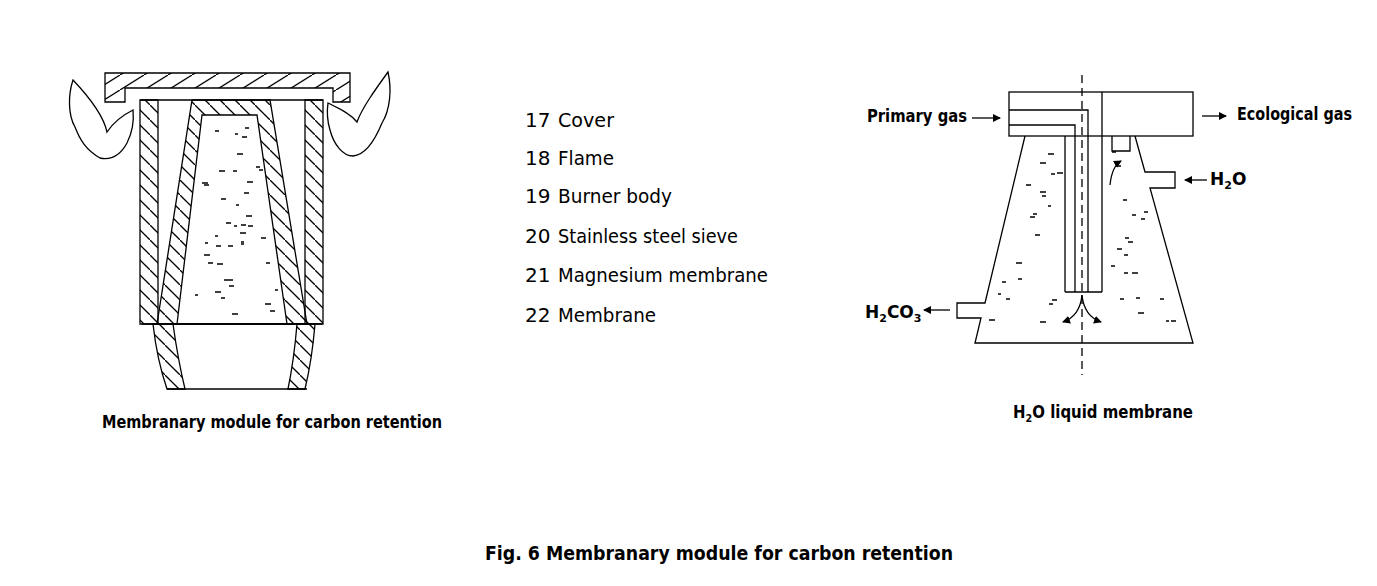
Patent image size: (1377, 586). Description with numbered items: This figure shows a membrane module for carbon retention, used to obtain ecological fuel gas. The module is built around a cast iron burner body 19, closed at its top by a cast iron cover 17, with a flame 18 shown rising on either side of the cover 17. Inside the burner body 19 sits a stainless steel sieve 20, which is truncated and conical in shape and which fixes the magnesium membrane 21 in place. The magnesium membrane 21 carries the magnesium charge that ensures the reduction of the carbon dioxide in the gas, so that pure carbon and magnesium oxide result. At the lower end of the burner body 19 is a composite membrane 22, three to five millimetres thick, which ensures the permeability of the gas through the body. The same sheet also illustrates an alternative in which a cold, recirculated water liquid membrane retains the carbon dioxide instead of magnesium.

The cover 17 is at (350, 71).
The flame 18 is at (373, 133).
The burner body 19 is at (318, 217).
The stainless steel sieve 20 is at (262, 288).
The magnesium membrane 21 is at (300, 281).
The membrane 22 is at (310, 314).